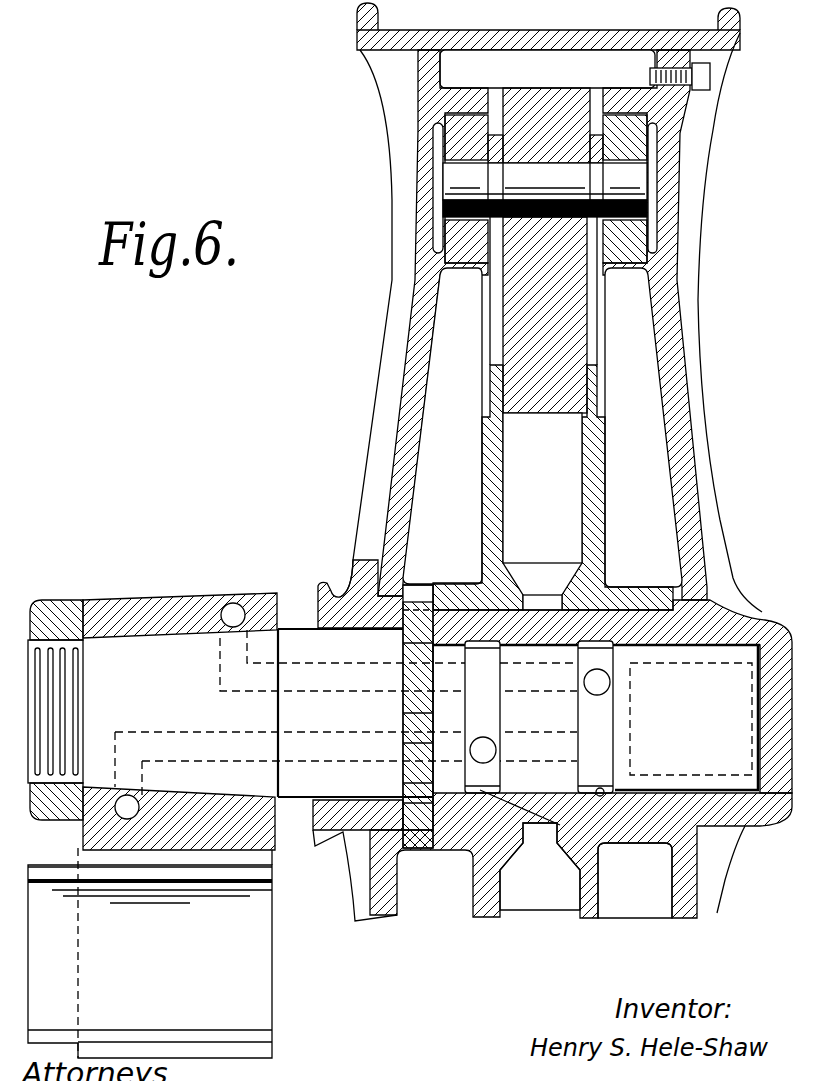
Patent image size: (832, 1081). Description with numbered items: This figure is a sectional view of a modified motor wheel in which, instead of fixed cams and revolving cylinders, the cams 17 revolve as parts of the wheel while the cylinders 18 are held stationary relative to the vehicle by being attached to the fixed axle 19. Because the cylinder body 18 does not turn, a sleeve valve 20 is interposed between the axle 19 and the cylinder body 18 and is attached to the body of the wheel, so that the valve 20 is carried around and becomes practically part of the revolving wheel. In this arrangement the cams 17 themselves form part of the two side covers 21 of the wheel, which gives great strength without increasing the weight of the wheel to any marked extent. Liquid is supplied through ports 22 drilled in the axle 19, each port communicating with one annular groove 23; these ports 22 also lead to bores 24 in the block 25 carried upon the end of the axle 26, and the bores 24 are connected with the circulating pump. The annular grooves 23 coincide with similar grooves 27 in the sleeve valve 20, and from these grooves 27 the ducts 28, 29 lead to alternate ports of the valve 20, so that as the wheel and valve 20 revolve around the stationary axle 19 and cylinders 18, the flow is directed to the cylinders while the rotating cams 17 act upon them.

The cams 17 is at (546, 214).
The cylinders 18 is at (600, 461).
The fixed axle 19 is at (367, 710).
The sleeve valve 20 is at (613, 617).
The side covers 21 is at (418, 403).
The ports 22 is at (394, 716).
The annular grooves 23 is at (585, 762).
The bores 24 is at (243, 609).
The block 25 is at (172, 603).
The axle 26 is at (150, 953).
The grooves 27 is at (605, 859).
The duct 28 is at (583, 632).
The duct 29 is at (507, 917).